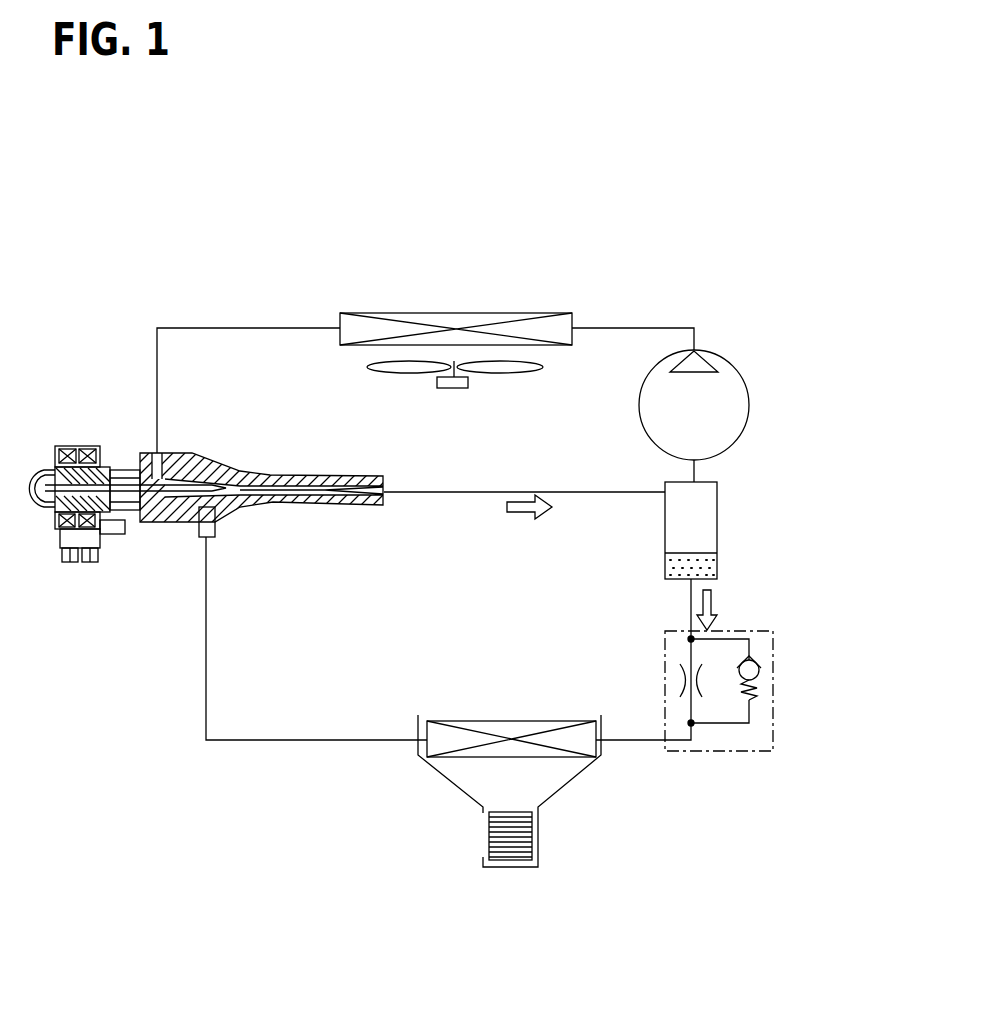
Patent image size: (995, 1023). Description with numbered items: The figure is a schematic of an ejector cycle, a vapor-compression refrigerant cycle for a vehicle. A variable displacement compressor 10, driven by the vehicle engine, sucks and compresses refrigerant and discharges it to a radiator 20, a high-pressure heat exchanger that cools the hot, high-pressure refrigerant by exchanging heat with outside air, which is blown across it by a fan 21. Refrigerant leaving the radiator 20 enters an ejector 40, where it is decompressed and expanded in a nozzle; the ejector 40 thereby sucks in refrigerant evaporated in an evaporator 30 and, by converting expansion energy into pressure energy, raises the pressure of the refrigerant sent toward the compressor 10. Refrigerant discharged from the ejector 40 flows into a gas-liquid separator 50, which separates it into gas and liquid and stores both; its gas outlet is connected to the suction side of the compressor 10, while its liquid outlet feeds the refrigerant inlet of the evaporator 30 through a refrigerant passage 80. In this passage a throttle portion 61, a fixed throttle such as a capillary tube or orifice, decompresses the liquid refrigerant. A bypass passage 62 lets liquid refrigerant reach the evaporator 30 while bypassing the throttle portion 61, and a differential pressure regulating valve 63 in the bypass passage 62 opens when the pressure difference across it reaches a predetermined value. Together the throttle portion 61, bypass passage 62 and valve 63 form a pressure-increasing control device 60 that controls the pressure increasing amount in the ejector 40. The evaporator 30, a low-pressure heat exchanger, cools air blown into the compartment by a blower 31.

The compressor 10 is at (712, 396).
The radiator 20 is at (338, 322).
The cooling fan 21 is at (512, 368).
The evaporator 30 is at (447, 735).
The blower fan 31 is at (535, 838).
The ejector 40 is at (97, 420).
The gas-liquid separator 50 is at (700, 537).
The pressure-increasing control device 60 is at (794, 733).
The throttle portion 61 is at (677, 680).
The bypass passage 62 is at (738, 639).
The differential pressure regulating valve 63 is at (762, 690).
The refrigerant passage 80 is at (690, 604).